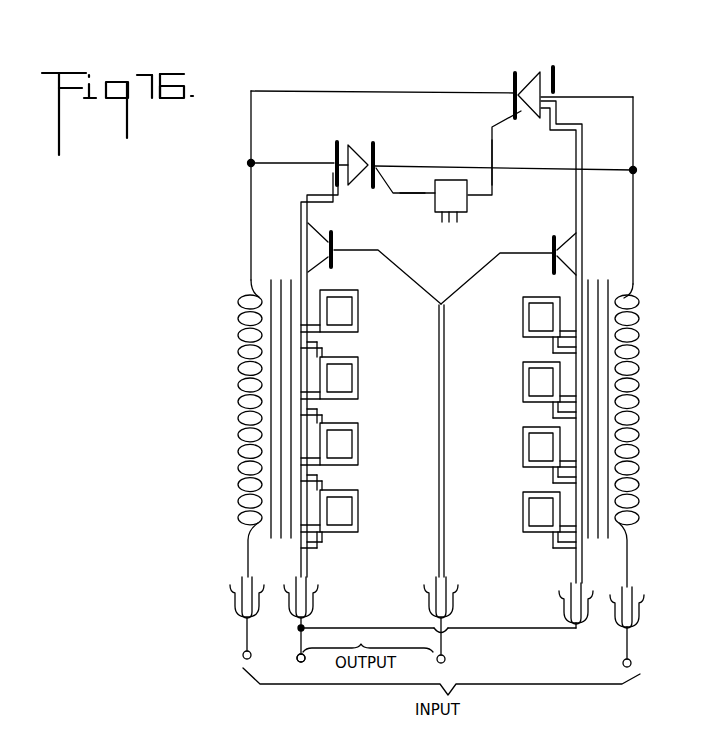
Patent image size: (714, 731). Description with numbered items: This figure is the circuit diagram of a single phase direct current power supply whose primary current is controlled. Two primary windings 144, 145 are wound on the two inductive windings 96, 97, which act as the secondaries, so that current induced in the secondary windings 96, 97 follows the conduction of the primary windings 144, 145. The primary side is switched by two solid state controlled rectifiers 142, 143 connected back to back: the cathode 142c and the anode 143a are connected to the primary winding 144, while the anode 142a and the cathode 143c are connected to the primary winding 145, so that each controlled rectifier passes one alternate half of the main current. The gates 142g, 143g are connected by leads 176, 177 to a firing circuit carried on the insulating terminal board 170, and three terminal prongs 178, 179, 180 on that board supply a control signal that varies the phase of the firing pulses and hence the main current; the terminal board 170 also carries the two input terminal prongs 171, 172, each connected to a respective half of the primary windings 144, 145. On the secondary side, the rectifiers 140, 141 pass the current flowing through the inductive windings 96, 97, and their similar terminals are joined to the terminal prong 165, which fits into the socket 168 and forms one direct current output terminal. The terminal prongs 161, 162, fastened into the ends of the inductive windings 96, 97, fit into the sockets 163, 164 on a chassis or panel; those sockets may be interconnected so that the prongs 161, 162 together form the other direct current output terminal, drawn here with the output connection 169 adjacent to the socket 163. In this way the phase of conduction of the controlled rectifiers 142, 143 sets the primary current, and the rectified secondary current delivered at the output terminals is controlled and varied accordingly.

The inductive winding 96 is at (358, 371).
The inductive winding 97 is at (523, 378).
The rectifier 140 is at (334, 243).
The rectifier 141 is at (551, 238).
The solid state controlled rectifier 142 is at (366, 148).
The anode 142a is at (378, 153).
The cathode 142c is at (358, 141).
The gate 142g is at (382, 178).
The solid state controlled rectifier 143 is at (520, 115).
The anode 143a is at (513, 80).
The cathode 143c is at (541, 113).
The gate 143g is at (503, 110).
The primary winding 144 is at (240, 347).
The primary winding 145 is at (640, 371).
The terminal prong 161 is at (308, 584).
The terminal prong 162 is at (566, 586).
The socket 163 is at (315, 612).
The socket 164 is at (563, 618).
The terminal prong 165 is at (449, 580).
The socket 168 is at (449, 605).
The output terminal 169 is at (295, 658).
The insulating terminal board 170 is at (457, 181).
The terminal prong 171 is at (236, 588).
The terminal prong 172 is at (637, 588).
The lead 176 is at (400, 198).
The lead 177 is at (490, 127).
The terminal prong 178 is at (440, 225).
The terminal prong 179 is at (449, 225).
The terminal prong 180 is at (459, 220).